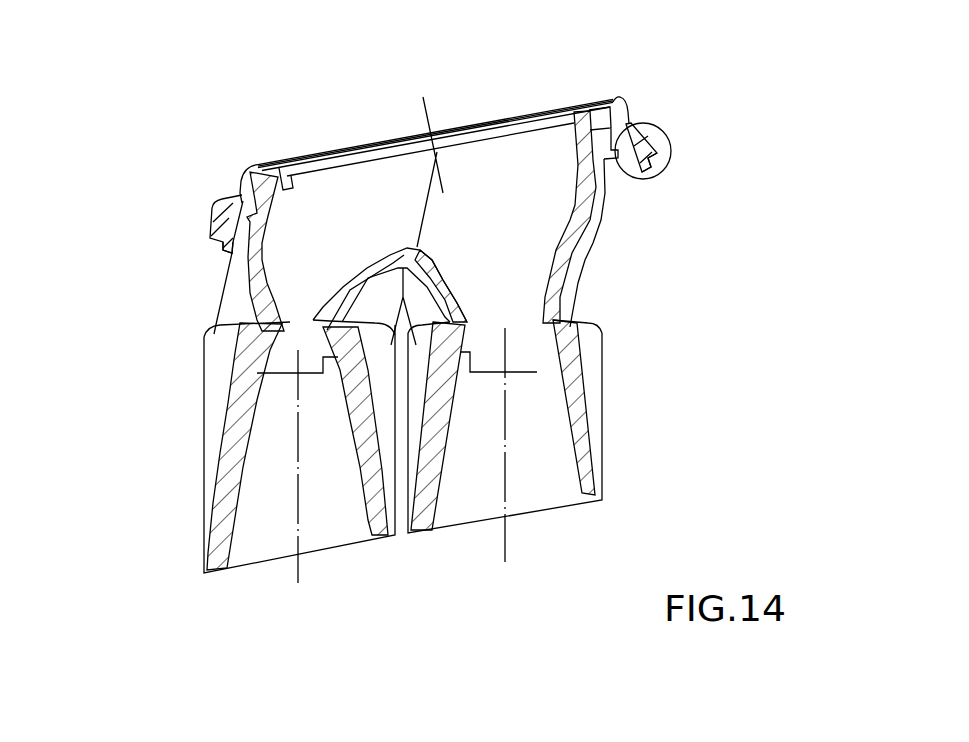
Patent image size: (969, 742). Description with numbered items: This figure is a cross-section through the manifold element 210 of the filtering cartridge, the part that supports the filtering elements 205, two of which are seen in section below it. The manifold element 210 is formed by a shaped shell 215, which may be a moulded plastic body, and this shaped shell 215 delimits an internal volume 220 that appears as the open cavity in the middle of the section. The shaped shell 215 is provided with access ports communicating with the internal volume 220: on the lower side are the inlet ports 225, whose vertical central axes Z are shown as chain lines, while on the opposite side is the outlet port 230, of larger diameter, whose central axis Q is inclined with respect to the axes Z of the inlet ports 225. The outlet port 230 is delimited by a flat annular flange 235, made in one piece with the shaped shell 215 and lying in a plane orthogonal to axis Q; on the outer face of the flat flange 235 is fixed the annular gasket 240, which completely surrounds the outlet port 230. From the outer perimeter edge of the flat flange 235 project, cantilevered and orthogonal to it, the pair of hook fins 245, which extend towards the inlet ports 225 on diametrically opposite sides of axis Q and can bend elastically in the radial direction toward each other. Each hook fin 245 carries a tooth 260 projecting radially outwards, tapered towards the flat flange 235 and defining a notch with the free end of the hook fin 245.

The manifold element 210 is at (185, 178).
The shaped shell 215 is at (594, 233).
The internal volume 220 is at (503, 231).
The inlet ports 225 is at (257, 373).
The filtering elements 205 is at (208, 490).
The outlet port 230 is at (498, 133).
The flat annular flange 235 is at (606, 125).
The annular gasket 240 is at (620, 101).
The hook fins 245 is at (219, 247).
The tooth 260 is at (216, 227).